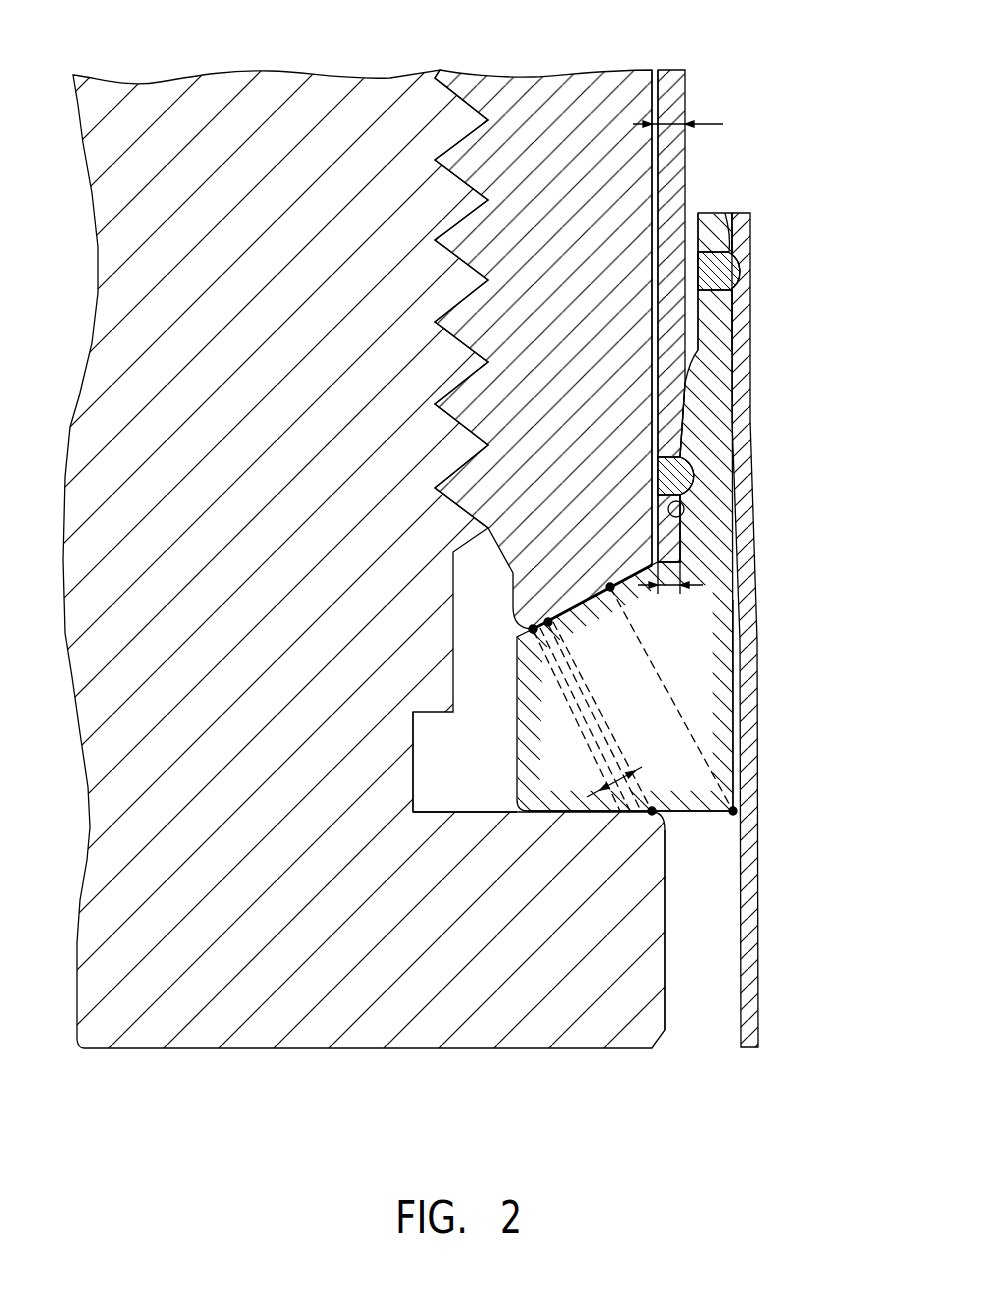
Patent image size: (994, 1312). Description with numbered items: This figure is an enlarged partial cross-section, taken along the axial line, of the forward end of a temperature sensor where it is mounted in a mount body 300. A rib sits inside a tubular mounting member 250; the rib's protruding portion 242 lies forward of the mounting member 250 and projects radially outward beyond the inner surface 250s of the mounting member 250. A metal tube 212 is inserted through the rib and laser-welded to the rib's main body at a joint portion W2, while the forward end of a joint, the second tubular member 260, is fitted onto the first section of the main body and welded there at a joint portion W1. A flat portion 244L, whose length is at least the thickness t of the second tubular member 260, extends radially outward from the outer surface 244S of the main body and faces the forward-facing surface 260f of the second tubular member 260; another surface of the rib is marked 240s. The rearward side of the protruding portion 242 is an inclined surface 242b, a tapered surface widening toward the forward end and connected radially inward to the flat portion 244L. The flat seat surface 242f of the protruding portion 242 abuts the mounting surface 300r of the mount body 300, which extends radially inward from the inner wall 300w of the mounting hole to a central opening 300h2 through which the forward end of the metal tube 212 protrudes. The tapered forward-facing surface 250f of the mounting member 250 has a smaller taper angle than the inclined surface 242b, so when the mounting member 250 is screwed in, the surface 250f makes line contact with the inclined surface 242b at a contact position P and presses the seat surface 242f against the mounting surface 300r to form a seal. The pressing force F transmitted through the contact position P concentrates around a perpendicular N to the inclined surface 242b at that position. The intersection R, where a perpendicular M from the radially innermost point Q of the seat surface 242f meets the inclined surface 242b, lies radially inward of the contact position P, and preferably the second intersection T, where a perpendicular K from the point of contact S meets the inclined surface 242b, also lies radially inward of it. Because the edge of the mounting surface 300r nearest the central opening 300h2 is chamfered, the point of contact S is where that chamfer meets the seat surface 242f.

The mount body 300 is at (263, 102).
The mounting member 250 is at (570, 102).
The inner surface 250s is at (645, 330).
The forward-facing surface 250f is at (653, 560).
The second tubular member 260 is at (688, 182).
The forward-facing surface 260f is at (668, 572).
The protruding portion 242 is at (673, 757).
The inclined surface 242b is at (640, 598).
The seat surface 242f is at (717, 817).
The side surface of frame member 240s is at (735, 640).
The outer surface 244S is at (683, 497).
The flat portion 244L is at (678, 592).
The metal tube 212 is at (760, 949).
The joint portion W1 is at (695, 468).
The joint portion W2 is at (740, 272).
The thickness t is at (678, 109).
The perpendicular M is at (735, 678).
The perpendicular N is at (572, 720).
The perpendicular K is at (602, 717).
The pressing force F is at (615, 790).
The contact position P is at (534, 622).
The second intersection T is at (549, 615).
The intersection R is at (608, 583).
The point of contact S is at (652, 811).
The radially innermost point Q is at (733, 811).
The inner wall 300w is at (413, 745).
The mounting surface 300r is at (448, 812).
The central opening 300h2 is at (706, 1008).